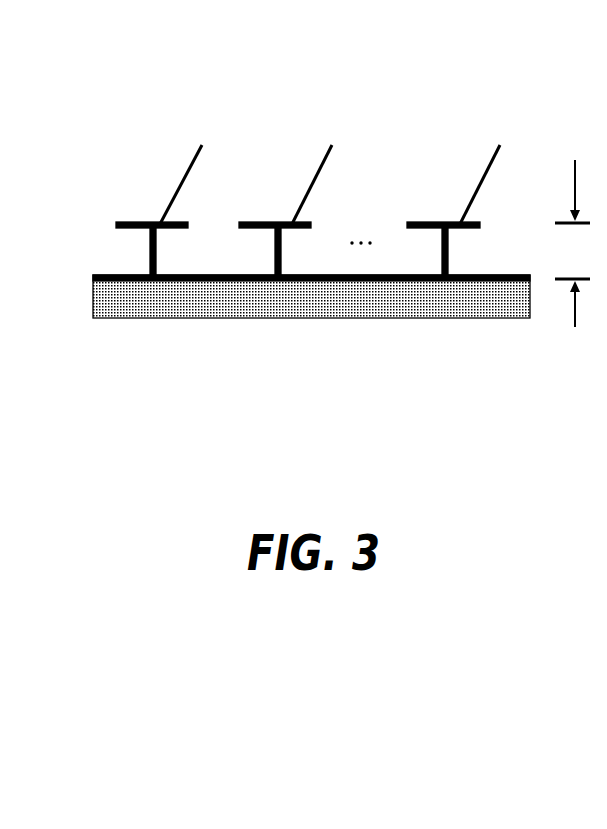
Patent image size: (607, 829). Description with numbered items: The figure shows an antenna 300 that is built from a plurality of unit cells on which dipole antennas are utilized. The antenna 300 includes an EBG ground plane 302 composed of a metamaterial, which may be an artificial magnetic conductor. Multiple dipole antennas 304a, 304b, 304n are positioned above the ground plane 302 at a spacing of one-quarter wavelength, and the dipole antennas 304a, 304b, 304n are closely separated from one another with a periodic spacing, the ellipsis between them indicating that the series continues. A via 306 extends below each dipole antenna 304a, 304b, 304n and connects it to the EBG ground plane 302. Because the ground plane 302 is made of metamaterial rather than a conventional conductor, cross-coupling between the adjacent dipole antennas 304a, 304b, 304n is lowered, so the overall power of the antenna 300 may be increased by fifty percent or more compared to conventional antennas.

The antenna 300 is at (179, 145).
The EBG ground plane 302 is at (357, 318).
The dipole antenna 304a is at (156, 189).
The dipole antenna 304b is at (323, 181).
The dipole antenna 304n is at (491, 181).
The via 306 is at (152, 243).